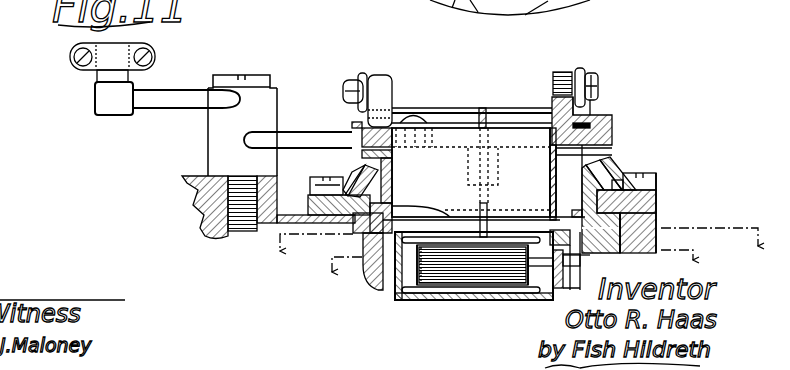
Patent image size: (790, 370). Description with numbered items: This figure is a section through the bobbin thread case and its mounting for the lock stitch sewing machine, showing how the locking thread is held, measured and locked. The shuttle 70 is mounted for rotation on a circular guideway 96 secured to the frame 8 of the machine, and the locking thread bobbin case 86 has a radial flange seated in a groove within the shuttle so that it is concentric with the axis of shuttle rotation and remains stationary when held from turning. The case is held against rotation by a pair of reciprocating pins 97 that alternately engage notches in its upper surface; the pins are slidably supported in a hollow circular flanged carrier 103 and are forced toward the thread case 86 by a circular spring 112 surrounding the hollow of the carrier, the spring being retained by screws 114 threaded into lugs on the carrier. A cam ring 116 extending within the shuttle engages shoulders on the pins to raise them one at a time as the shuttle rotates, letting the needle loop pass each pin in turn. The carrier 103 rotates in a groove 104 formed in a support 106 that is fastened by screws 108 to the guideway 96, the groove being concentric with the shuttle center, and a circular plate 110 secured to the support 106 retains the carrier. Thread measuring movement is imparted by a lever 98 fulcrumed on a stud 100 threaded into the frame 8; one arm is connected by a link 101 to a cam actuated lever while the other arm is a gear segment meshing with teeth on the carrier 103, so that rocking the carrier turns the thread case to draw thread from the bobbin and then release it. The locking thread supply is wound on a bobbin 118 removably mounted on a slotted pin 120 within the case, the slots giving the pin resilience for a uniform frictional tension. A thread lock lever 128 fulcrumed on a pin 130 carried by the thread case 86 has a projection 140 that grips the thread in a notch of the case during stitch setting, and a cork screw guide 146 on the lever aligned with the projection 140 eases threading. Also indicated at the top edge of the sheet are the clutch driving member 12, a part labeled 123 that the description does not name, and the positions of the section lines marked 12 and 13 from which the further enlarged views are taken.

The frame 8 is at (657, 218).
The driving member 12 is at (506, 255).
The section line 13 is at (501, 276).
The shuttle 70 is at (370, 280).
The locking thread bobbin case 86 is at (392, 298).
The circular guideway 96 is at (331, 210).
The reciprocating pins 97 is at (479, 108).
The lever 98 is at (188, 106).
The stud 100 is at (255, 64).
The link 101 is at (170, 46).
The hollow circular flanged carrier 103 is at (545, 127).
The groove 104 is at (612, 137).
The support 106 is at (614, 165).
The screws 108 is at (318, 177).
The circular plate 110 is at (596, 113).
The circular spring 112 is at (417, 108).
The screws 114 is at (346, 80).
The cam ring 116 is at (400, 214).
The bobbin 118 is at (428, 288).
The slotted pin 120 is at (475, 297).
The pointer 123 is at (527, 21).
The thread lock lever 128 is at (575, 250).
The pin 130 is at (578, 7).
The projection 140 is at (548, 285).
The cork screw guide 146 is at (474, 28).